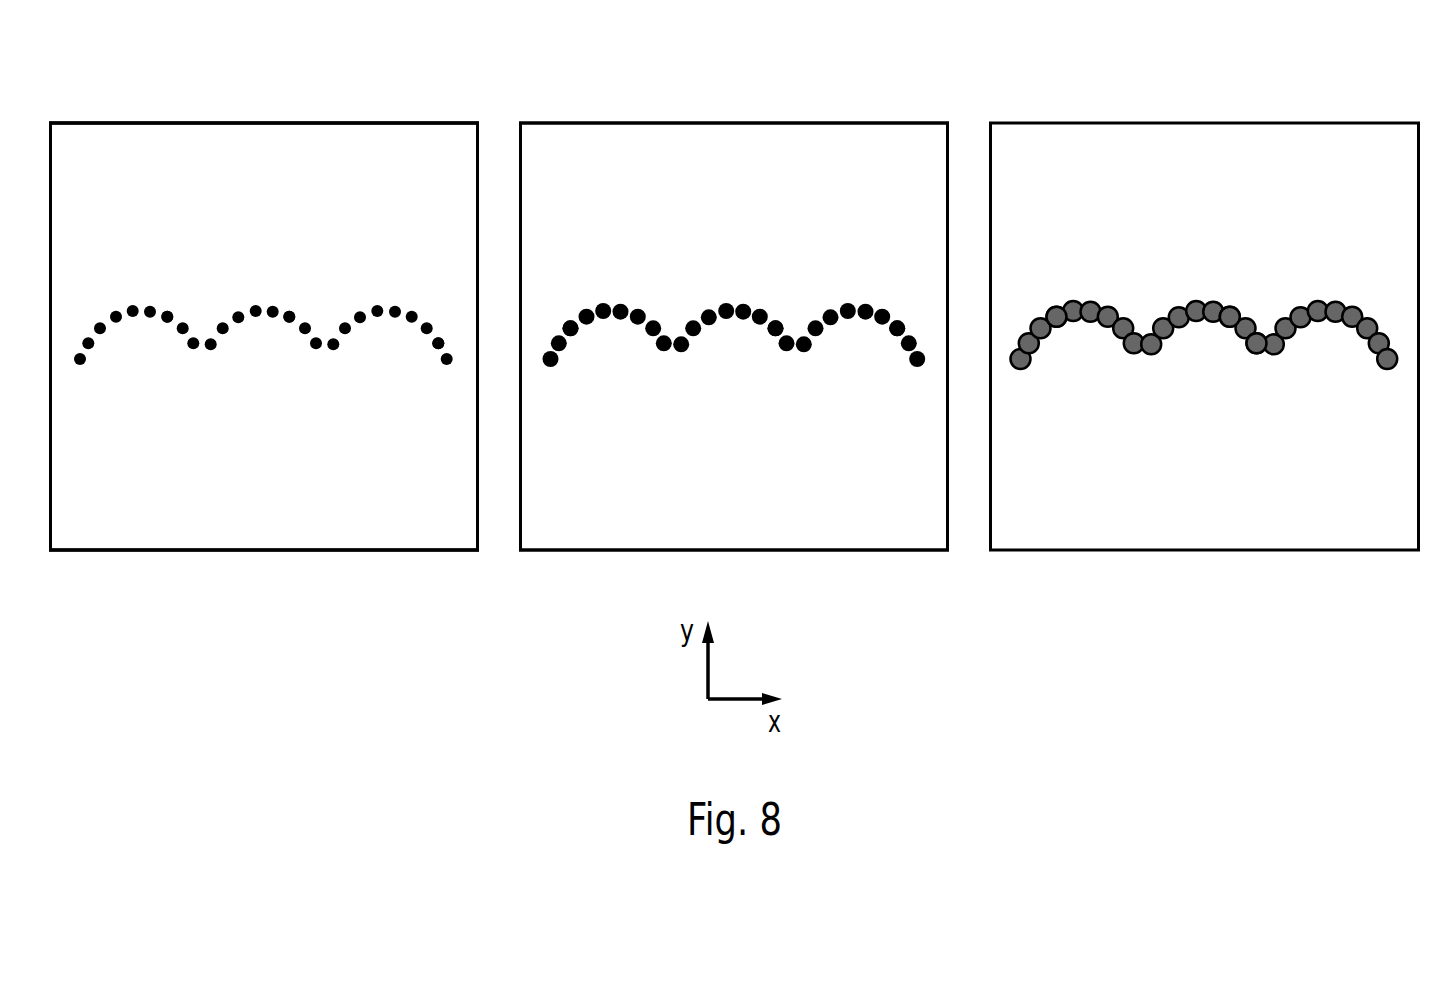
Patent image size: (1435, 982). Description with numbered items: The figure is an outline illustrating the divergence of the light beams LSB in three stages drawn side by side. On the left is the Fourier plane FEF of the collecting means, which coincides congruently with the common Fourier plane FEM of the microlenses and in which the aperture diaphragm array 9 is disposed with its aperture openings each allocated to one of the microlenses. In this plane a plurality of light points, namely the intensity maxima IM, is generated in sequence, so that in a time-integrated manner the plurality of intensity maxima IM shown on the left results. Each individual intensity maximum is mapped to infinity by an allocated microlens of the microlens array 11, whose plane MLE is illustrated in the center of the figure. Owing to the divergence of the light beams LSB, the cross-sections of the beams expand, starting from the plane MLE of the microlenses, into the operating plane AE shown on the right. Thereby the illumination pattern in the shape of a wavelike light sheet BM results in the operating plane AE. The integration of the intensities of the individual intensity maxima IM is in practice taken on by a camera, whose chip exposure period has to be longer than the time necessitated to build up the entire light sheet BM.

The Fourier plane of the collecting means FEF is at (160, 123).
The aperture diaphragm array 9 is at (260, 123).
The common Fourier plane of the microlenses FEM is at (360, 123).
The microlens array 11 is at (730, 123).
The plane of the microlenses MLE is at (830, 123).
The operating plane AE is at (1200, 123).
The light sheet BM is at (263, 270).
The intensity maxima IM is at (165, 320).
The light beams LSB is at (574, 333).